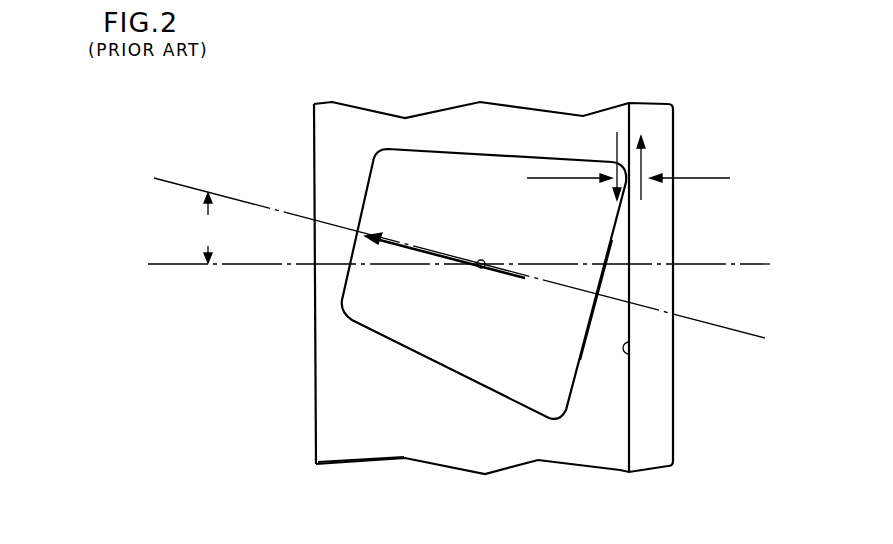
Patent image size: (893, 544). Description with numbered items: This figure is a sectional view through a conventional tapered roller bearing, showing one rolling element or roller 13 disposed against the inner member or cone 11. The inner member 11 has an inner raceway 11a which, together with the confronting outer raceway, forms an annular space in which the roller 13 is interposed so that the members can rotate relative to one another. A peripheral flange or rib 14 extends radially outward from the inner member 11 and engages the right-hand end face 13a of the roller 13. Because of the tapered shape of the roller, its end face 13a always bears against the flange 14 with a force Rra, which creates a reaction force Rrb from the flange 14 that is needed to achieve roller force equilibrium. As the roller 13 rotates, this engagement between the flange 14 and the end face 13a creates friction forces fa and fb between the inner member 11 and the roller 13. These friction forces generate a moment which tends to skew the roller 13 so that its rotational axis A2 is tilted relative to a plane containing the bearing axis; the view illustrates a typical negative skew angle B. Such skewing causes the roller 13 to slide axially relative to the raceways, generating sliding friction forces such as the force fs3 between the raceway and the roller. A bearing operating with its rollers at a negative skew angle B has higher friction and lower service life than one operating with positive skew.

The inner member or cone 11 is at (675, 446).
The inner raceway 11a is at (386, 442).
The rolling element or roller 13 is at (509, 333).
The right-hand end face 13a is at (585, 370).
The peripheral flange or rib 14 is at (631, 352).
The rotational axis A2 is at (266, 200).
The negative skew angle B is at (207, 228).
The sliding friction force fs3 is at (417, 247).
The flange contact force Rra is at (539, 178).
The flange reaction force Rrb is at (715, 179).
The friction force fa is at (615, 145).
The friction force fb is at (641, 193).